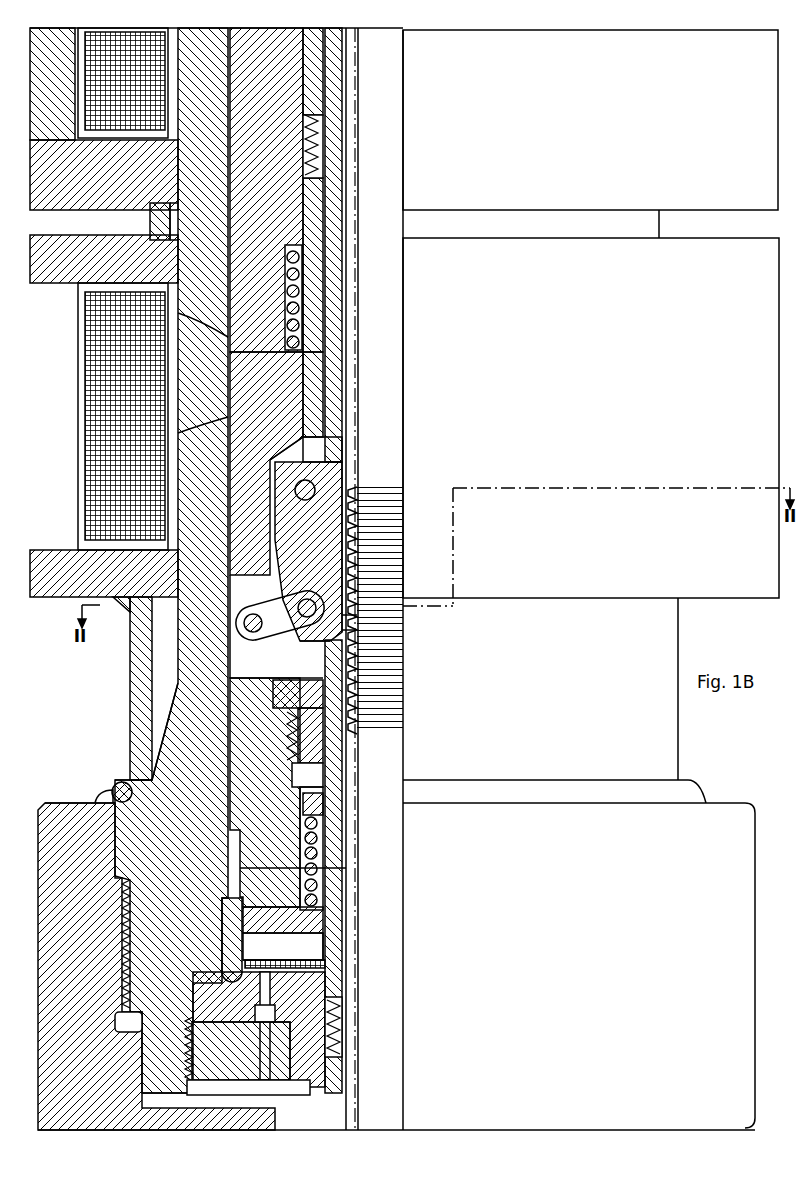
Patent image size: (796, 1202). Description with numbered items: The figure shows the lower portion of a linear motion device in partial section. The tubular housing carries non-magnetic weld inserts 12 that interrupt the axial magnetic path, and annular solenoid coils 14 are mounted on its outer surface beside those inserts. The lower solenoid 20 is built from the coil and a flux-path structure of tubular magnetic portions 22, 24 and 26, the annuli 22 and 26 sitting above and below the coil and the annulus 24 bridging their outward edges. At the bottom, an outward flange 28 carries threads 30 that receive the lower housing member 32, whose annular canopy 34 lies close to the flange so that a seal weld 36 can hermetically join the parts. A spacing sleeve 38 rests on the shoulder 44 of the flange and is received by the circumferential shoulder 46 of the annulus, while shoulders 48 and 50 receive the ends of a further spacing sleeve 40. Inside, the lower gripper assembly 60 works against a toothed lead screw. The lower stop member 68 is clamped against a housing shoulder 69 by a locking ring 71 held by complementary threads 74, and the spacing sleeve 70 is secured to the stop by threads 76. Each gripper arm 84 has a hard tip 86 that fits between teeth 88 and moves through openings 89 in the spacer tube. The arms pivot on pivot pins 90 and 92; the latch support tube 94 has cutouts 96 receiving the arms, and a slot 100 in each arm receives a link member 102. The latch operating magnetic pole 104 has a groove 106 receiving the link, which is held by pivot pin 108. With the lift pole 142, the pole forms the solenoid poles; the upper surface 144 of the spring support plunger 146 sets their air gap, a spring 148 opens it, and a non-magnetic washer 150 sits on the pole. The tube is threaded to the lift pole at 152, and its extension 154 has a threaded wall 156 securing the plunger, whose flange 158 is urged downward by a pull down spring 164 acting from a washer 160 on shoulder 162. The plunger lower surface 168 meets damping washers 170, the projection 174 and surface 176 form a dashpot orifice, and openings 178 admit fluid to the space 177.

The weld inserts 12 is at (207, 393).
The solenoid coils 14 is at (112, 34).
The solenoid 20 is at (45, 243).
The tubular magnetic portion 22 is at (66, 242).
The tubular magnetic portion 24 is at (50, 34).
The tubular magnetic portion 26 is at (52, 596).
The outward flange 28 is at (140, 752).
The threads 30 is at (125, 963).
The lower housing member 32 is at (62, 806).
The annular canopy 34 is at (97, 795).
The annular seal weld 36 is at (120, 782).
The spacing sleeve 38 is at (130, 670).
The spacing sleeve 40 is at (150, 222).
The shoulder 44 is at (152, 735).
The circumferential shoulder 46 is at (118, 598).
The circumferential shoulder 48 is at (150, 231).
The circumferential shoulder 50 is at (150, 212).
The gripper assembly 60 is at (350, 521).
The lower stop member 68 is at (308, 1032).
The shoulder 69 is at (258, 961).
The spacing sleeve 70 is at (335, 206).
The locking ring 71 is at (232, 1072).
The complementary threads 74 is at (172, 1062).
The complementary threads 76 is at (342, 1047).
The gripper arms 84 is at (336, 546).
The tip 86 is at (350, 618).
The teeth 88 is at (352, 630).
The openings 89 is at (333, 448).
The pivot pin 90 is at (312, 486).
The pivot pin 92 is at (305, 604).
The latch support tube 94 is at (315, 384).
The cutouts 96 is at (305, 455).
The slot 100 is at (330, 558).
The link member 102 is at (285, 632).
The latch operating magnetic pole 104 is at (275, 413).
The groove 106 is at (266, 597).
The pivot pin 108 is at (252, 614).
The lift pole 142 is at (296, 224).
The upper surface 144 is at (280, 680).
The spring support plunger 146 is at (252, 700).
The spring 148 is at (300, 276).
The non-magnetic washer 150 is at (305, 346).
The threaded mounting 152 is at (312, 140).
The extension 154 is at (403, 704).
The threaded outer side wall 156 is at (330, 748).
The circumferential flange 158 is at (318, 921).
The annular washer 160 is at (322, 808).
The shoulder 162 is at (322, 796).
The pull down spring 164 is at (317, 840).
The lower surface 168 is at (322, 956).
The washers 170 is at (323, 964).
The circumferential projection 174 is at (240, 942).
The complementary surface 176 is at (346, 868).
The space 177 is at (322, 953).
The openings 178 is at (270, 986).